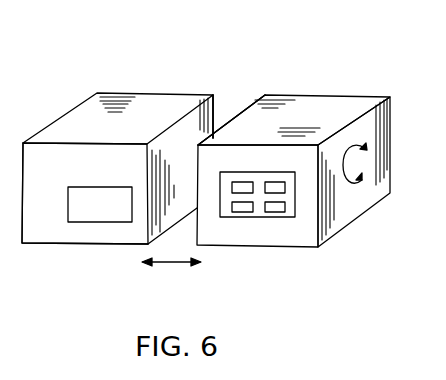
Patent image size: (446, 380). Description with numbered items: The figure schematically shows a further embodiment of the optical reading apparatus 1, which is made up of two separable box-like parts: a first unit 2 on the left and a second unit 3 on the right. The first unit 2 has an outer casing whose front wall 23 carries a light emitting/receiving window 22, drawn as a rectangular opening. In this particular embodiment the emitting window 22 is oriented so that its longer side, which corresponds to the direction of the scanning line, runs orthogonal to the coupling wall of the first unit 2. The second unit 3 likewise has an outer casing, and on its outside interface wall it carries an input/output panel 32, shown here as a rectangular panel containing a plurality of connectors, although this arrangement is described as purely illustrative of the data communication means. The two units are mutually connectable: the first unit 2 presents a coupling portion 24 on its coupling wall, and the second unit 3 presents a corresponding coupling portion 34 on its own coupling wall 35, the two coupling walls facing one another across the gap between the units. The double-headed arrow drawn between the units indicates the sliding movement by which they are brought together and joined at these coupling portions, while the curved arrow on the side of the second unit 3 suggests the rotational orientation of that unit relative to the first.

The optical reading apparatus 1 is at (120, 52).
The first unit 2 is at (80, 125).
The second unit 3 is at (337, 103).
The light emitting/receiving window 22 is at (92, 210).
The wall 23 is at (47, 220).
The coupling portion 24 is at (220, 102).
The input/output (I/O) panel 32 is at (287, 194).
The coupling portion 34 is at (253, 100).
The coupling wall 35 is at (231, 120).